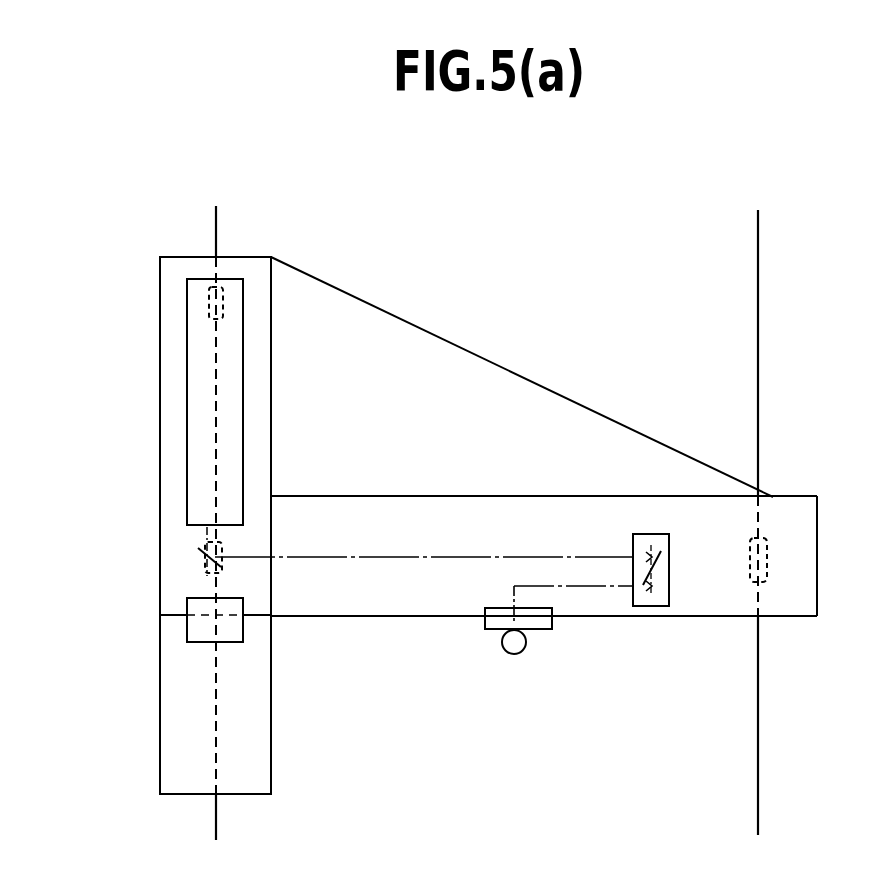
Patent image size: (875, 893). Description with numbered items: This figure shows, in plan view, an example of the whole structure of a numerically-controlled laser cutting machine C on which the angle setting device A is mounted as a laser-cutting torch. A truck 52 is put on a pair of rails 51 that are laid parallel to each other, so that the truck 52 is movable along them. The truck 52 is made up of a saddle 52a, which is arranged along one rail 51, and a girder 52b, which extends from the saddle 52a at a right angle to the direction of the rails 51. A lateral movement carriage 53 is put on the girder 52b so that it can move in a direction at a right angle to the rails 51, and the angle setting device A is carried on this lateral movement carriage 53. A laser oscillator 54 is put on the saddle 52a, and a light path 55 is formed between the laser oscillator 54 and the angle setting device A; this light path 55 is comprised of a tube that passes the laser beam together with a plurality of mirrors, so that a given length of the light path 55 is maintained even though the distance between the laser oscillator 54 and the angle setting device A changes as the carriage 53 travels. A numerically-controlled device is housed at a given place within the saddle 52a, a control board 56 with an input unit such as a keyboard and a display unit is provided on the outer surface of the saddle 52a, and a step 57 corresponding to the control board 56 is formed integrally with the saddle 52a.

The rails 51 is at (216, 222).
The truck 52 is at (395, 621).
The saddle 52a is at (178, 572).
The girder 52b is at (697, 604).
The lateral movement carriage 53 is at (543, 622).
The laser oscillator 54 is at (196, 410).
The light path 55 is at (514, 554).
The control board 56 is at (192, 630).
The step 57 is at (178, 733).
The numerically-controlled laser cutting machine C is at (577, 367).
The angle setting device A is at (497, 647).